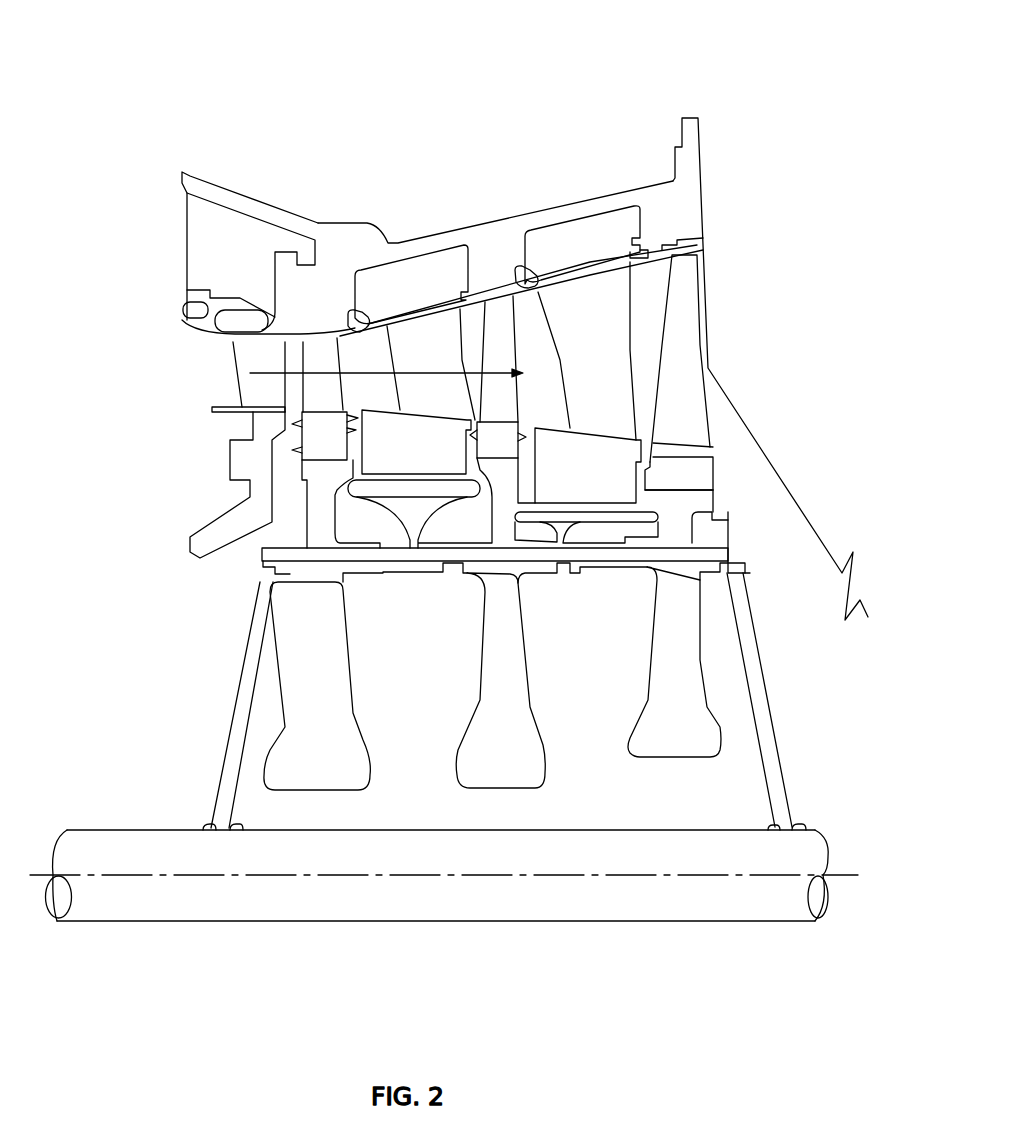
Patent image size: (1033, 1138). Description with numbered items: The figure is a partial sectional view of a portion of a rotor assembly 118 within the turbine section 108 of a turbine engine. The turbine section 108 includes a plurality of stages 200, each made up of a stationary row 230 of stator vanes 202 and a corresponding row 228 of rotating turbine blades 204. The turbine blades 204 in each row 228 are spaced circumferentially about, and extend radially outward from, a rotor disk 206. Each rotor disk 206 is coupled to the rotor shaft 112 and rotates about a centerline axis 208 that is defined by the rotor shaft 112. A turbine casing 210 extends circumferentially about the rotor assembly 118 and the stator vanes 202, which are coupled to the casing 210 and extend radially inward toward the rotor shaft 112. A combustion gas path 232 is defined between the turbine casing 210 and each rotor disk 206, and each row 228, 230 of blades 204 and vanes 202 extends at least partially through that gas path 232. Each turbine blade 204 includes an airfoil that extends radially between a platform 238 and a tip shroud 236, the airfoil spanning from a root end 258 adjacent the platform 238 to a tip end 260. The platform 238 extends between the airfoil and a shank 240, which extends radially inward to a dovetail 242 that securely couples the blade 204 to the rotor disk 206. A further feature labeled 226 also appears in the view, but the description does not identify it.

The turbine section 108 is at (355, 138).
The rotor shaft 112 is at (580, 828).
The rotor assembly 118 is at (735, 60).
The stages 200 is at (368, 302).
The stator vanes 202 is at (443, 361).
The turbine blades 204 is at (326, 357).
The rotor disk 206 is at (323, 690).
The centerline axis 208 is at (118, 870).
The turbine casing 210 is at (477, 232).
The vane platform 226 is at (475, 312).
The row of rotating turbine blades 228 is at (308, 320).
The stationary row of stator vanes 230 is at (451, 280).
The combustion gas path 232 is at (253, 374).
The tip shroud 236 is at (714, 237).
The platform 238 is at (670, 440).
The shank 240 is at (692, 456).
The dovetail 242 is at (693, 495).
The root end 258 is at (690, 483).
The tip end 260 is at (683, 259).